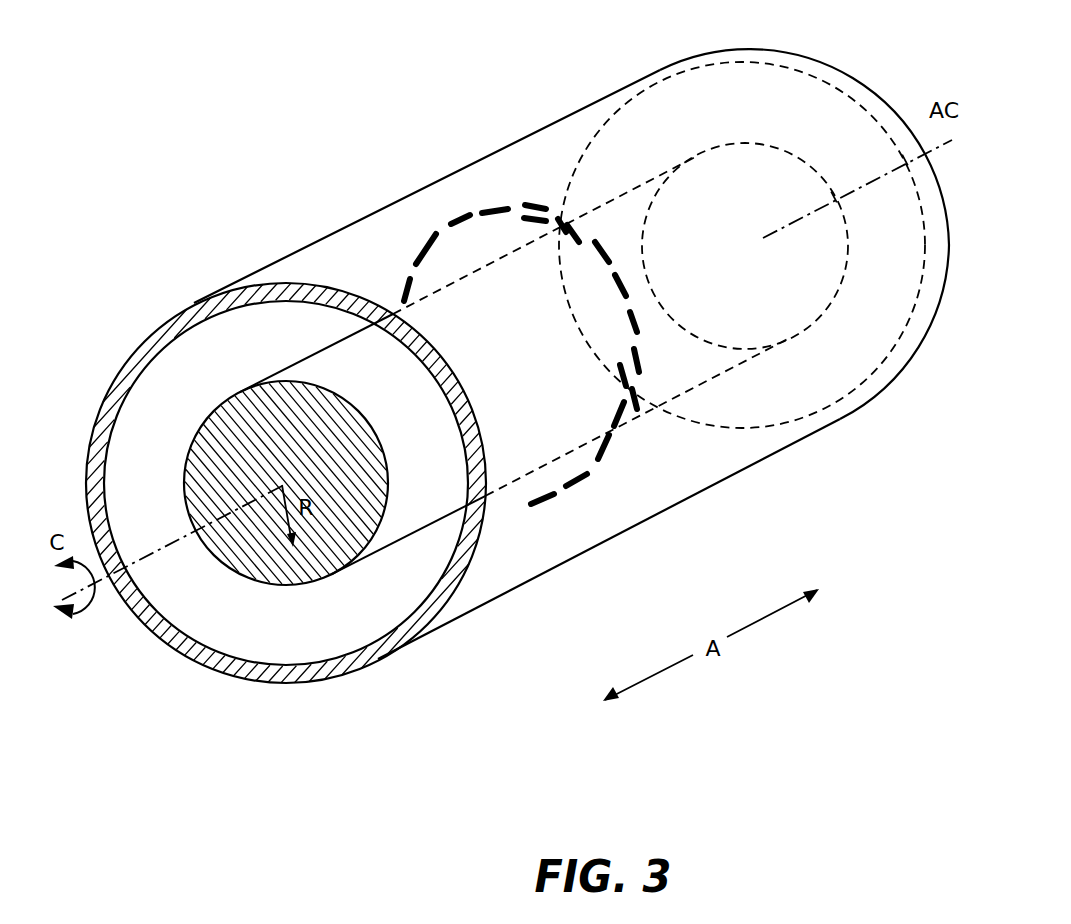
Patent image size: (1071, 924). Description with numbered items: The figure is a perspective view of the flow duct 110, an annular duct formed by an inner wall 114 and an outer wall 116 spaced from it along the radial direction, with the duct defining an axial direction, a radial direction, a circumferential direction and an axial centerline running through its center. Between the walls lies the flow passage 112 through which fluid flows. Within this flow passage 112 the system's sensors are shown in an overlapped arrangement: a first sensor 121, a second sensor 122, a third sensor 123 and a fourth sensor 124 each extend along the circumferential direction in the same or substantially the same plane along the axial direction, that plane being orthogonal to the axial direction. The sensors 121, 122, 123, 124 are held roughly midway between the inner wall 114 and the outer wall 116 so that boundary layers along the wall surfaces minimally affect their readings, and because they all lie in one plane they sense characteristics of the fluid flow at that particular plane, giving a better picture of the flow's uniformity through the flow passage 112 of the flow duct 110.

The flow duct 110 is at (510, 118).
The flow passage 112 is at (192, 381).
The inner wall 114 is at (277, 452).
The outer wall 116 is at (144, 341).
The first sensor 121 is at (452, 213).
The second sensor 122 is at (640, 333).
The third sensor 123 is at (590, 473).
The fourth sensor 124 is at (508, 516).